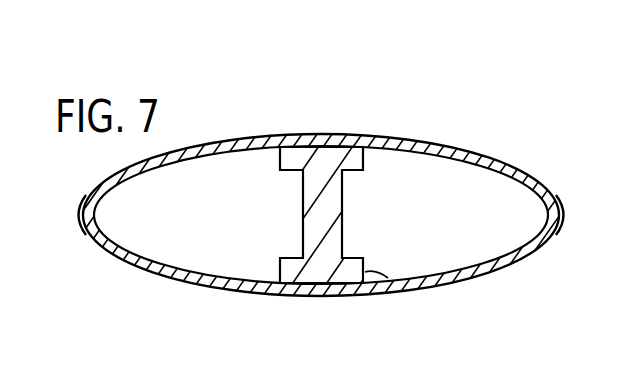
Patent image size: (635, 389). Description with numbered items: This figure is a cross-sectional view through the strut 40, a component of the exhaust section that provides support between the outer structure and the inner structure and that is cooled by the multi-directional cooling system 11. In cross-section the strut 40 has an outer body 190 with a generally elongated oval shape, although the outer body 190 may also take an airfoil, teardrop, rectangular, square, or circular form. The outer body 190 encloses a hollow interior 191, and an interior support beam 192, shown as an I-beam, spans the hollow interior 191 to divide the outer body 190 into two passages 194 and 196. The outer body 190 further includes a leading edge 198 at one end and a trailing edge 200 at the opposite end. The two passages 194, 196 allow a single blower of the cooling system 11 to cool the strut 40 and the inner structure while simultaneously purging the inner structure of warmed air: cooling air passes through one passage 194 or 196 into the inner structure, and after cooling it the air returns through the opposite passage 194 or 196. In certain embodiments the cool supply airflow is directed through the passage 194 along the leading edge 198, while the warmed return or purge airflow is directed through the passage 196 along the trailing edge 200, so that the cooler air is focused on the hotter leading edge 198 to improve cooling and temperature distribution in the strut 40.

The strut 40 is at (447, 79).
The multi-directional cooling system 11 is at (511, 134).
The outer body 190 is at (230, 290).
The hollow interior 191 is at (150, 229).
The interior support beam 192 is at (365, 272).
The passage 194 is at (241, 229).
The passage 196 is at (444, 228).
The leading edge 198 is at (87, 221).
The trailing edge 200 is at (553, 226).